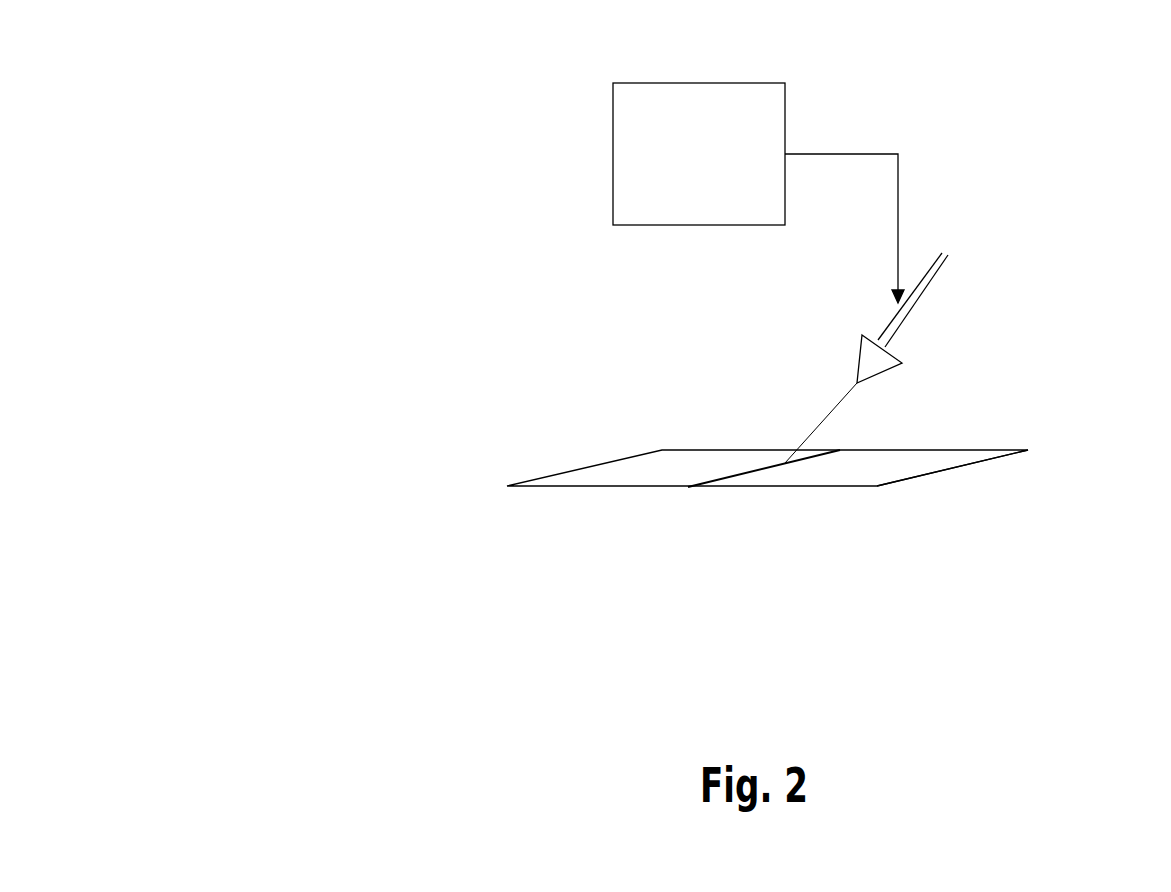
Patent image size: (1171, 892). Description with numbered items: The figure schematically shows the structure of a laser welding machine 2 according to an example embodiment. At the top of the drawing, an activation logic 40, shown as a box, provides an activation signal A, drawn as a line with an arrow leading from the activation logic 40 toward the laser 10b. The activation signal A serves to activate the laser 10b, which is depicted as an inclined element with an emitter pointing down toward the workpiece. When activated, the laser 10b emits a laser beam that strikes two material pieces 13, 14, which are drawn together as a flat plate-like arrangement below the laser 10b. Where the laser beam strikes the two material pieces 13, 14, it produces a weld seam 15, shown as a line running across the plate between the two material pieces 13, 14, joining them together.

The laser welding machine 2 is at (310, 83).
The activation logic 40 is at (598, 90).
The activation signal A is at (918, 162).
The laser 10b is at (938, 293).
The material piece 13 is at (575, 458).
The material piece 14 is at (1028, 450).
The weld seam 15 is at (730, 487).